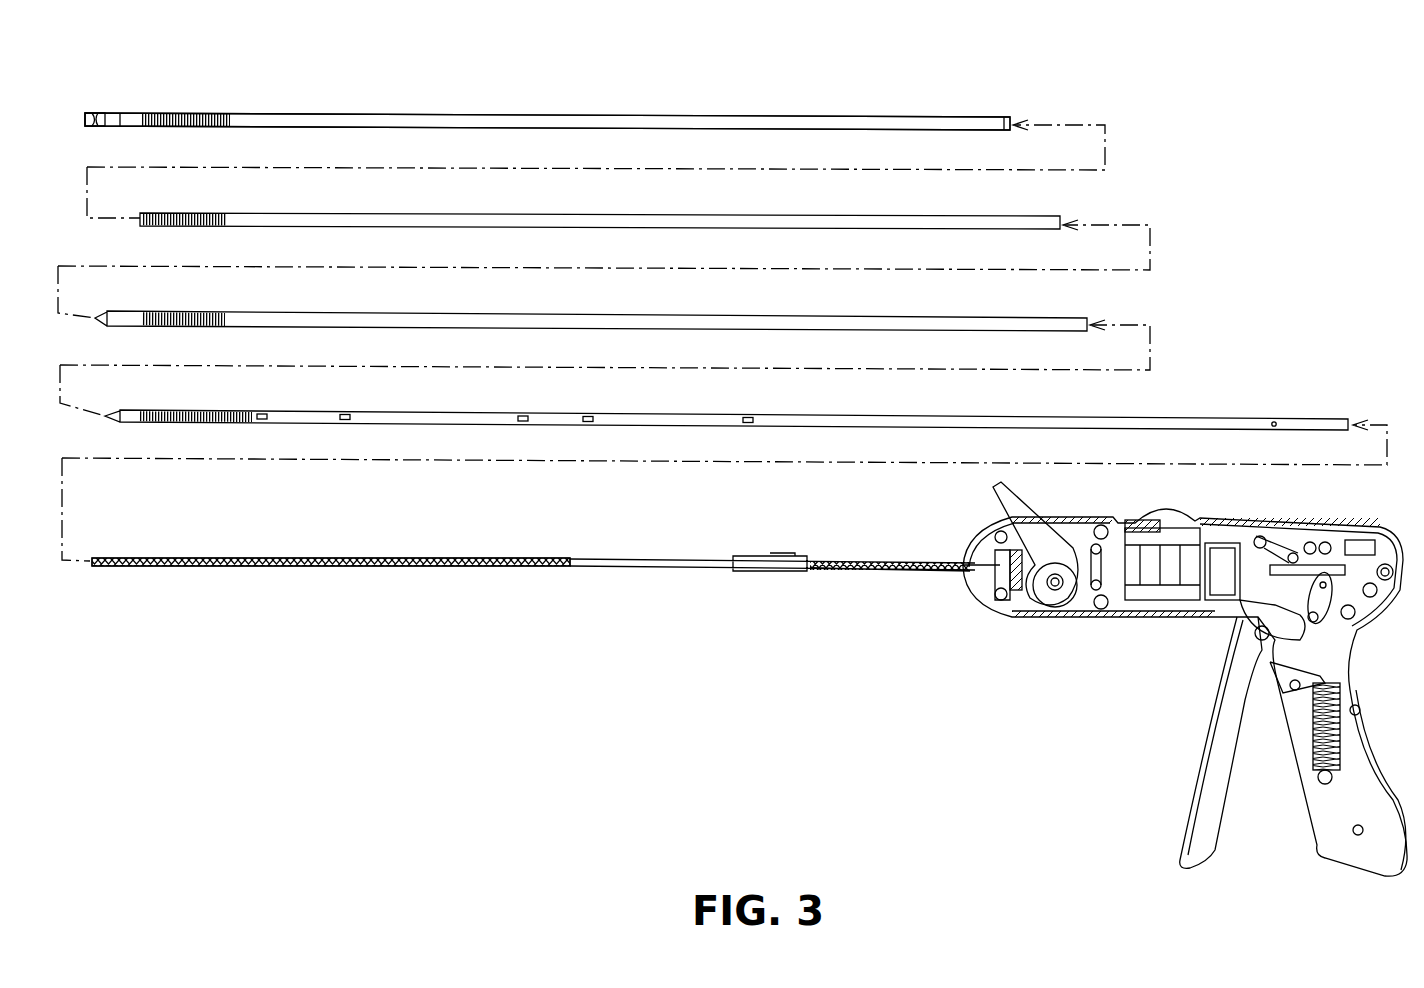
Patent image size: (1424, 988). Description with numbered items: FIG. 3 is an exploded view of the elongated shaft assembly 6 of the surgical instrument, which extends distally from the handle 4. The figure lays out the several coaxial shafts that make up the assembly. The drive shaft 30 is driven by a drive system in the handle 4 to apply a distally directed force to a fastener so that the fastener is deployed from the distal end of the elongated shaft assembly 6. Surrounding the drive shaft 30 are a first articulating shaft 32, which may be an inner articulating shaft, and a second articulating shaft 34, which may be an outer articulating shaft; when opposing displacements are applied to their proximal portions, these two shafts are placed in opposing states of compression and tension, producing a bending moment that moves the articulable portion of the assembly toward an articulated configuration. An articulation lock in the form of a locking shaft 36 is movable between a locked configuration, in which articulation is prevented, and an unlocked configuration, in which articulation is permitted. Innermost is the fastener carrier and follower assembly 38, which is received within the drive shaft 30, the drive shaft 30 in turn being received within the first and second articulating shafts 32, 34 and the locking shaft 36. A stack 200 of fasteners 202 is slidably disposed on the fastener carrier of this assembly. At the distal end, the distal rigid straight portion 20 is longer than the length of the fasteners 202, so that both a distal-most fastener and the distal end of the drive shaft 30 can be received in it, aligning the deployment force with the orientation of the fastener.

The handle 4 is at (1137, 659).
The elongated shaft assembly 6 is at (806, 96).
The distal rigid straight portion 20 is at (106, 112).
The drive shaft 30 is at (1253, 420).
The first articulating shaft 32 is at (998, 318).
The second articulating shaft 34 is at (935, 217).
The locking shaft 36 is at (400, 113).
The fastener carrier and follower assembly 38 is at (531, 604).
The stack 200 is at (563, 552).
The fasteners 202 is at (331, 581).